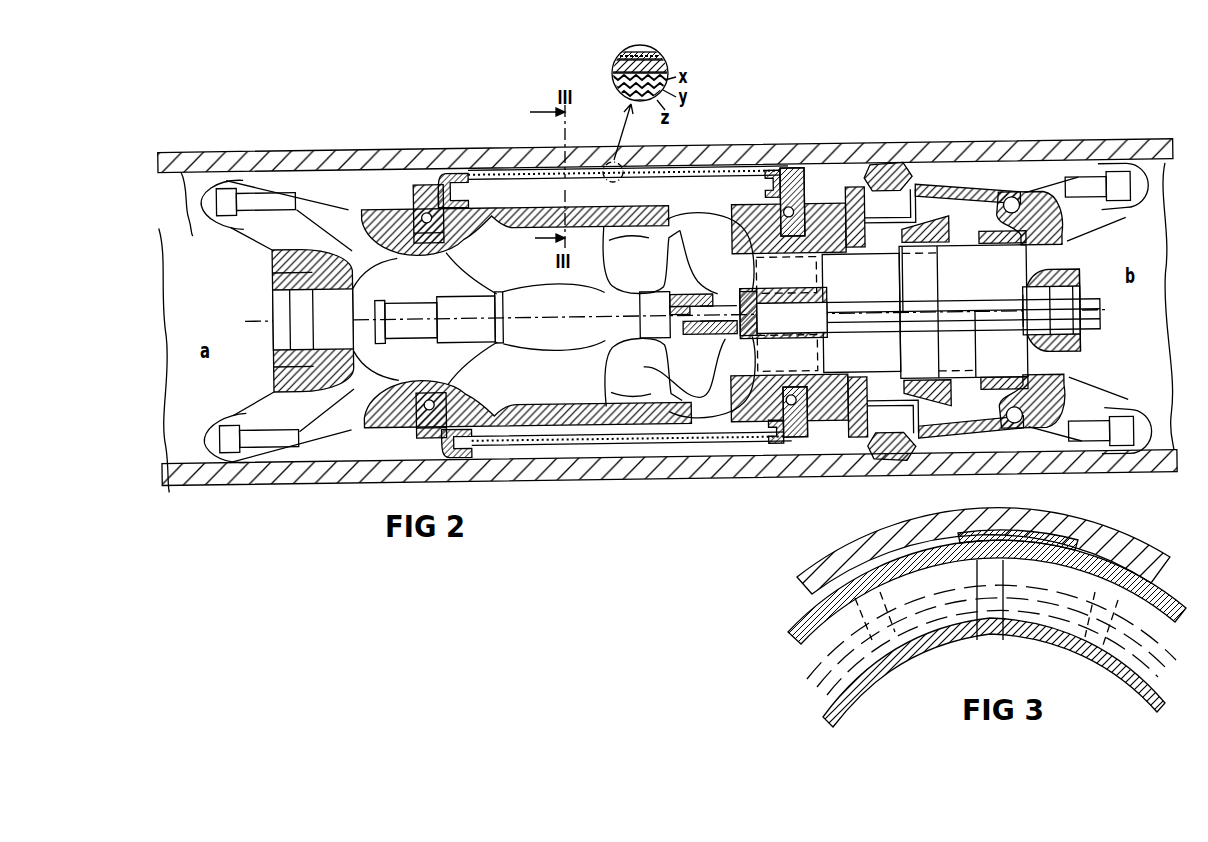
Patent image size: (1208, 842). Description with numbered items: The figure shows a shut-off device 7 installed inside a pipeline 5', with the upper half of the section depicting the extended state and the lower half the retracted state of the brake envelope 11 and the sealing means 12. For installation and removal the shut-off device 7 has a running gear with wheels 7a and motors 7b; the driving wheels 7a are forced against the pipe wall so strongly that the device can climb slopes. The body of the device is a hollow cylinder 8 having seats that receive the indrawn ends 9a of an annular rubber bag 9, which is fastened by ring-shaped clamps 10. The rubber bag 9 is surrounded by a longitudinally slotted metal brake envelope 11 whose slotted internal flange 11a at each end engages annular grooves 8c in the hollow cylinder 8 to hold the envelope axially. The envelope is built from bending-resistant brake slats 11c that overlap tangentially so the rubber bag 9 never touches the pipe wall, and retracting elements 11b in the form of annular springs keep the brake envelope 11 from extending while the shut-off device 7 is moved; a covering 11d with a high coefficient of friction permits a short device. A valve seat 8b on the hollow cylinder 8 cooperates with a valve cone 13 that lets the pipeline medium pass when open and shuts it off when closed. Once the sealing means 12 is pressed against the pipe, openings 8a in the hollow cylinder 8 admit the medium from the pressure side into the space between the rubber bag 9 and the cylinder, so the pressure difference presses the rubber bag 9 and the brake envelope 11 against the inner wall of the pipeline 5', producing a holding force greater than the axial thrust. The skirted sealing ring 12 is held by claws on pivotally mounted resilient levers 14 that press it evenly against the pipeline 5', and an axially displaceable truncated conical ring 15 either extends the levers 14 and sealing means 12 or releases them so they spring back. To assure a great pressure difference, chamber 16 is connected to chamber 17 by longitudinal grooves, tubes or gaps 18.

In FIG. 2, the chamber 17 is at (183, 152).
In FIG. 2, the shut-off device 7 is at (683, 436).
In FIG. 2, the wheels 7a is at (222, 459).
In FIG. 2, the motors 7b is at (273, 442).
In FIG. 2, the hollow cylinder 8 is at (610, 420).
In FIG. 3, the hollow cylinder 8 is at (900, 660).
In FIG. 2, the openings 8a is at (683, 226).
In FIG. 3, the openings 8a is at (995, 630).
In FIG. 2, the valve seat 8b is at (643, 425).
In FIG. 2, the annular grooves 8c is at (812, 182).
In FIG. 2, the annular rubber bag 9 is at (540, 168).
In FIG. 2, the indrawn ends 9a is at (485, 170).
In FIG. 2, the clamps 10 is at (445, 186).
In FIG. 2, the brake envelope 11 is at (662, 63).
In FIG. 2, the slotted internal flange 11a is at (440, 182).
In FIG. 2, the retracting elements 11b is at (395, 197).
In FIG. 3, the retracting elements 11b is at (826, 655).
In FIG. 3, the brake slats 11c is at (1075, 537).
In FIG. 2, the covering 11d is at (618, 57).
In FIG. 2, the sealing means 12 is at (905, 164).
In FIG. 2, the valve cone 13 is at (706, 214).
In FIG. 2, the resilient levers 14 is at (1002, 194).
In FIG. 2, the truncated conical ring 15 is at (962, 186).
In FIG. 2, the chamber 16 is at (852, 186).
In FIG. 3, the longitudinal grooves, tubes or gaps 18 is at (877, 558).
In FIG. 2, the pipeline 5' is at (1049, 216).